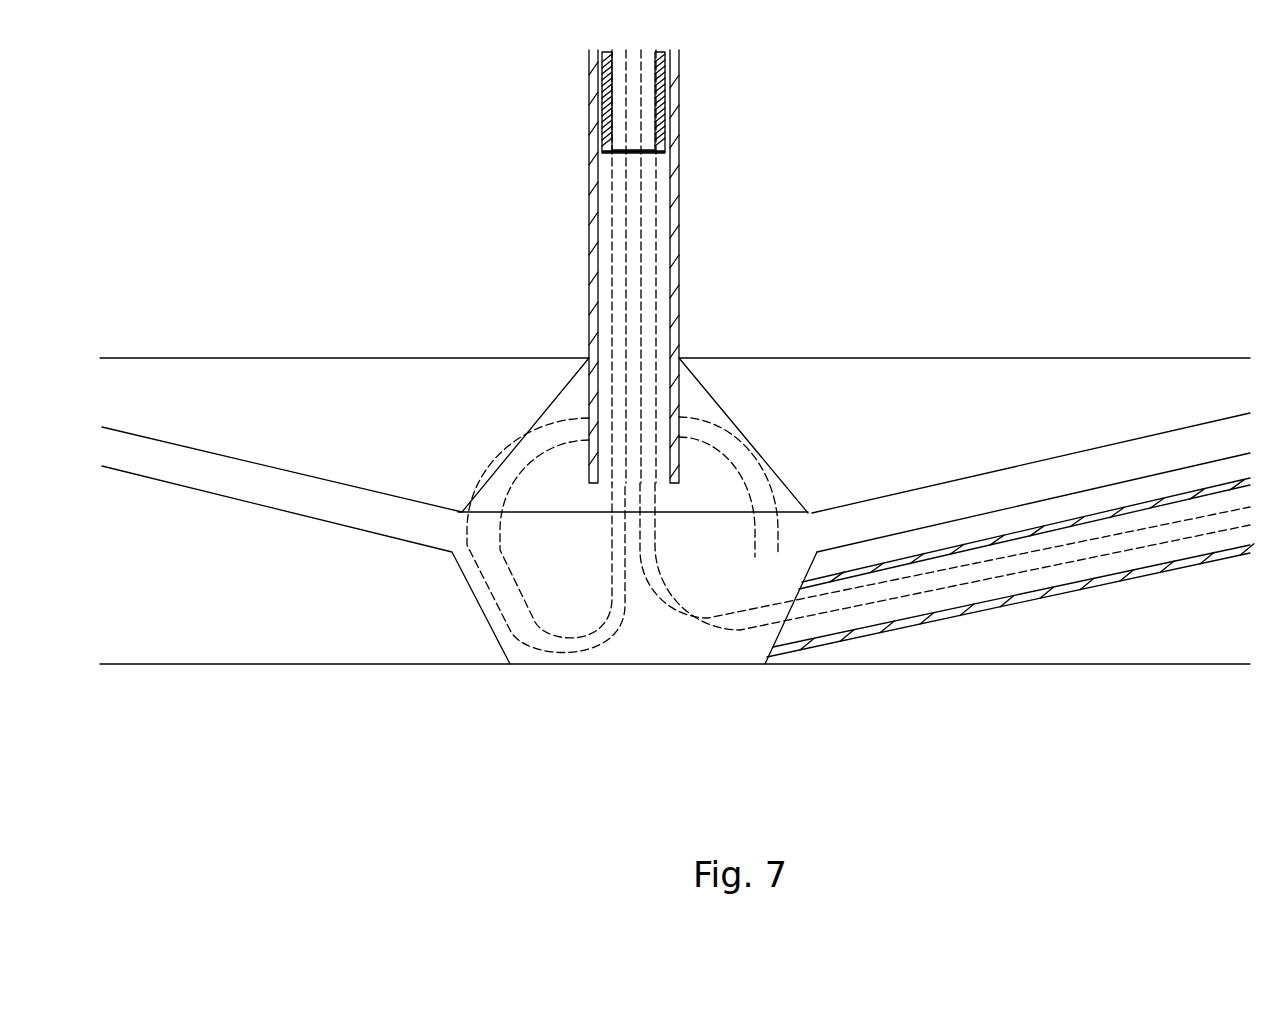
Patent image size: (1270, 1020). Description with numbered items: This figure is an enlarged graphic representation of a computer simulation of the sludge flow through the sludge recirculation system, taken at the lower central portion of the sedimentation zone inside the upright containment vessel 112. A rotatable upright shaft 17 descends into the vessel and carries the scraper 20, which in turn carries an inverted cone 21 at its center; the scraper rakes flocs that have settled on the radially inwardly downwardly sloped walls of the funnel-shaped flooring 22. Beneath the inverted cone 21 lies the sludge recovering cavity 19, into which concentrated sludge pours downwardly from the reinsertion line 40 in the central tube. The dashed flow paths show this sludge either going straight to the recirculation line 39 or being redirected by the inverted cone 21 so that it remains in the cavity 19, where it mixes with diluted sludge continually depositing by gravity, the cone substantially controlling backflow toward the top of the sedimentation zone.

The reinsertion line 40 is at (660, 90).
The rotatable upright shaft 17 is at (680, 173).
The scraper 20 is at (937, 372).
The inverted cone 21 is at (760, 460).
The funnel-shaped flooring 22 is at (250, 503).
The recirculation line 39 is at (1007, 600).
The sludge recovering cavity 19 is at (760, 664).
The upright containment vessel 112 is at (238, 665).